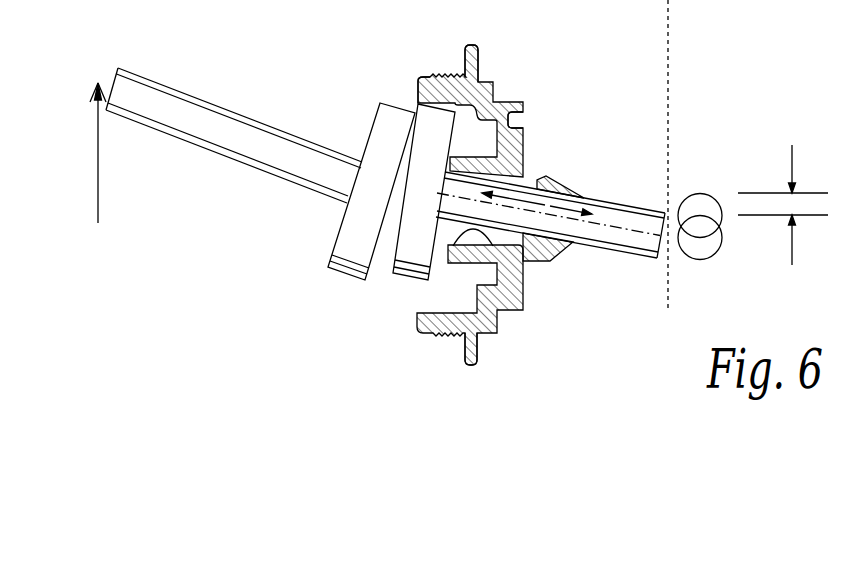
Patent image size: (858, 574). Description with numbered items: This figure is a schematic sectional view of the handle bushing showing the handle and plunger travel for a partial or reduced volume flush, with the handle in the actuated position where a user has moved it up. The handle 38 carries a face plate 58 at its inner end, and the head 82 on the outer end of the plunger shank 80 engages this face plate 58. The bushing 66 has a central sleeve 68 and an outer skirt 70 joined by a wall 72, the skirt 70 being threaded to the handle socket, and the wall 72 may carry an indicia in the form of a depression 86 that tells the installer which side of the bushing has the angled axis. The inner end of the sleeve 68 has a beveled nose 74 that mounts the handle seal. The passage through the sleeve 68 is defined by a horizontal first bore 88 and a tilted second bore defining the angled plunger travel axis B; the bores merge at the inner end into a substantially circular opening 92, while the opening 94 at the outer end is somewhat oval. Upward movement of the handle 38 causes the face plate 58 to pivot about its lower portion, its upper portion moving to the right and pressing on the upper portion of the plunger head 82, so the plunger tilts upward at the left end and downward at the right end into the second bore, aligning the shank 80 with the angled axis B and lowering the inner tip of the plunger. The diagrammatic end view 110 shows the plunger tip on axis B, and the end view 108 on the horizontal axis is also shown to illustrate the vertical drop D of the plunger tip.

The handle 38 is at (140, 108).
The face plate 58 is at (357, 208).
The head 82 is at (402, 280).
The opening 94 is at (441, 243).
The shank 80 is at (645, 210).
The angled plunger travel axis B is at (641, 238).
The wall 72 is at (527, 102).
The bushing 66 is at (485, 59).
The outer skirt 70 is at (433, 78).
The depression 86 is at (518, 122).
The circular opening 92 is at (582, 194).
The first bore 88 is at (523, 283).
The central sleeve 68 is at (470, 265).
The beveled nose 74 is at (565, 258).
The end view of plunger shank 108 is at (717, 194).
The end view of plunger tip 110 is at (707, 260).
The vertical drop D is at (783, 220).